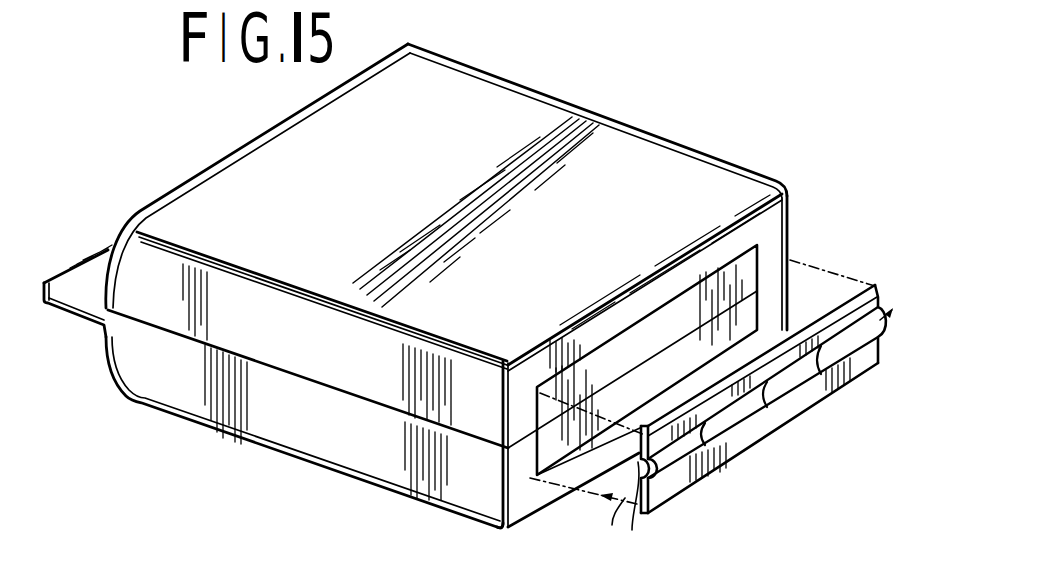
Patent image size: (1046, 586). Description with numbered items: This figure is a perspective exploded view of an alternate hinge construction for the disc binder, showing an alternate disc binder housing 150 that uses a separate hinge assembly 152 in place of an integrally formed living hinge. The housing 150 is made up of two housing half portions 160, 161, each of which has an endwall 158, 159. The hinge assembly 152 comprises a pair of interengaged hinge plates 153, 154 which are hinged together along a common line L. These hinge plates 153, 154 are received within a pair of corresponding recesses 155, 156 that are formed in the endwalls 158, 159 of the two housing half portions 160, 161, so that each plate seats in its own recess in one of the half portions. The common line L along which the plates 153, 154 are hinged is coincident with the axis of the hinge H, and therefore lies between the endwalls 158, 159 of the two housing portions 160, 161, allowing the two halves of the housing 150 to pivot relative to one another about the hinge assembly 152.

The disc binder housing 150 is at (446, 301).
The hinge assembly 152 is at (711, 380).
The hinge plate 153 is at (793, 360).
The hinge plate 154 is at (800, 397).
The recess 155 is at (692, 337).
The recess 156 is at (780, 292).
The endwall 158 is at (678, 328).
The endwall 159 is at (510, 498).
The housing half portion 160 is at (637, 170).
The housing half portion 161 is at (382, 447).